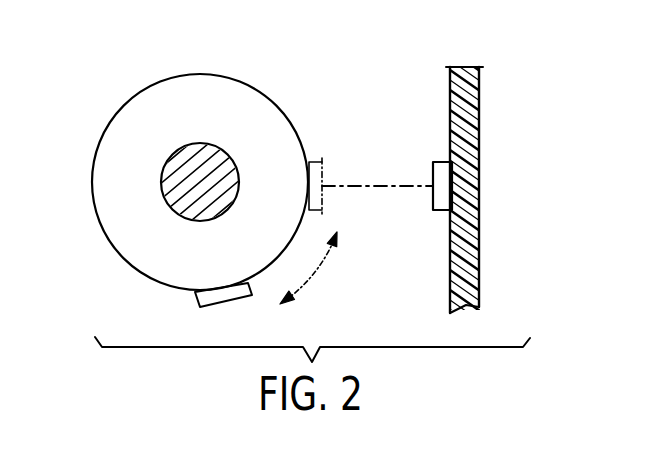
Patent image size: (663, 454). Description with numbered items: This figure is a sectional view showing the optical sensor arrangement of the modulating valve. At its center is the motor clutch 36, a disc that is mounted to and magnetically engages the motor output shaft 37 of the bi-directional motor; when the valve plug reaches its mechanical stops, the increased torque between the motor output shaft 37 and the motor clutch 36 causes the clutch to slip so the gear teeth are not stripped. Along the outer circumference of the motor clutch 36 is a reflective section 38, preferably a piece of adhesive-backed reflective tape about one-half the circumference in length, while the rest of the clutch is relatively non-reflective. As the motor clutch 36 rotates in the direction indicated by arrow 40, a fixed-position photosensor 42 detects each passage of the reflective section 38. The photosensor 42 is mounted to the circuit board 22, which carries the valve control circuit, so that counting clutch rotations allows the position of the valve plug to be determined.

The circuit board 22 is at (468, 70).
The motor clutch 36 is at (207, 95).
The motor output shaft 37 is at (162, 193).
The reflective section 38 is at (196, 294).
The arrow 40 is at (313, 272).
The photosensor 42 is at (438, 163).